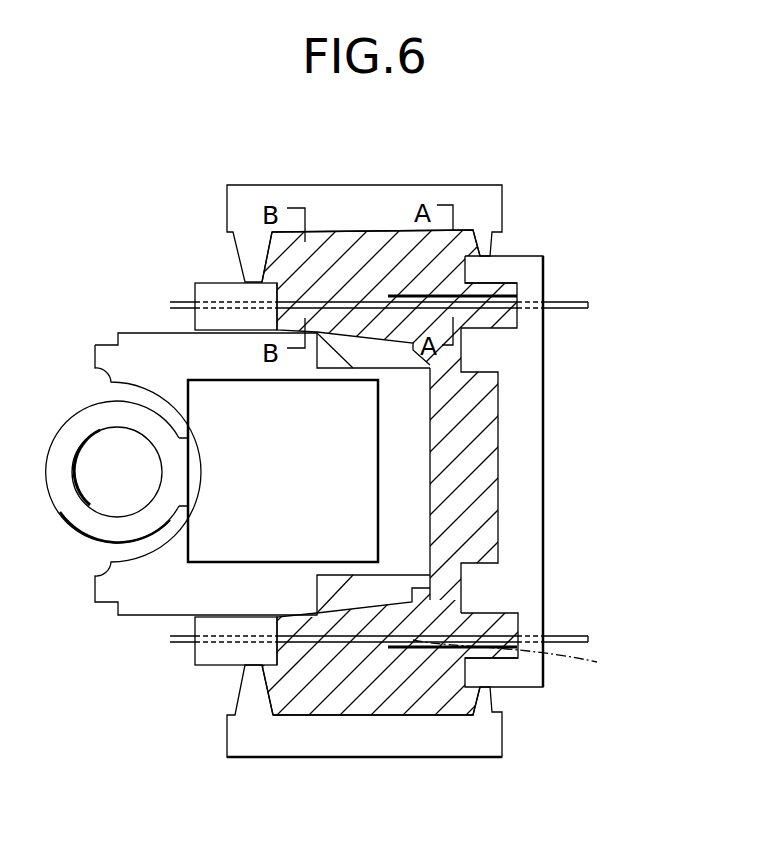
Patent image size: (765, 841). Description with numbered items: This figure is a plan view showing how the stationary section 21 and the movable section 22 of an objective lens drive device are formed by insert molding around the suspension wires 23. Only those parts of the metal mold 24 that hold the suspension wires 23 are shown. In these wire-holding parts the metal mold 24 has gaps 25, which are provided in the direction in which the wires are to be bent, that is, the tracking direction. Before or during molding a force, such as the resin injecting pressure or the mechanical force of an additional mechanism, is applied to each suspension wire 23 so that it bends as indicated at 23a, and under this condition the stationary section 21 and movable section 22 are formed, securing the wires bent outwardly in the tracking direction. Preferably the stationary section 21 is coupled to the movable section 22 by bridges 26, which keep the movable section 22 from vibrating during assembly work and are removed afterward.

The stationary section 21 is at (522, 267).
The movable section 22 is at (133, 342).
The suspension wire 23 is at (343, 300).
The bent suspension wire 23a is at (530, 659).
The metal mold 24 is at (488, 415).
The gap 25 is at (520, 294).
The bridge 26 is at (497, 735).